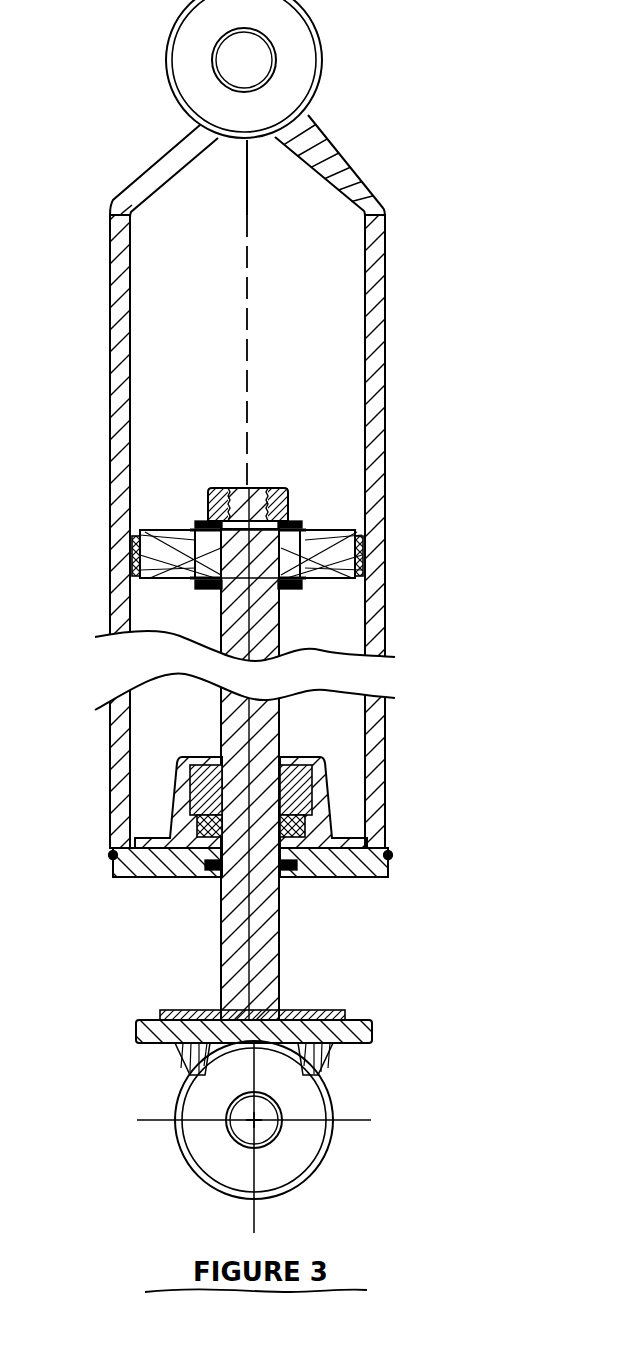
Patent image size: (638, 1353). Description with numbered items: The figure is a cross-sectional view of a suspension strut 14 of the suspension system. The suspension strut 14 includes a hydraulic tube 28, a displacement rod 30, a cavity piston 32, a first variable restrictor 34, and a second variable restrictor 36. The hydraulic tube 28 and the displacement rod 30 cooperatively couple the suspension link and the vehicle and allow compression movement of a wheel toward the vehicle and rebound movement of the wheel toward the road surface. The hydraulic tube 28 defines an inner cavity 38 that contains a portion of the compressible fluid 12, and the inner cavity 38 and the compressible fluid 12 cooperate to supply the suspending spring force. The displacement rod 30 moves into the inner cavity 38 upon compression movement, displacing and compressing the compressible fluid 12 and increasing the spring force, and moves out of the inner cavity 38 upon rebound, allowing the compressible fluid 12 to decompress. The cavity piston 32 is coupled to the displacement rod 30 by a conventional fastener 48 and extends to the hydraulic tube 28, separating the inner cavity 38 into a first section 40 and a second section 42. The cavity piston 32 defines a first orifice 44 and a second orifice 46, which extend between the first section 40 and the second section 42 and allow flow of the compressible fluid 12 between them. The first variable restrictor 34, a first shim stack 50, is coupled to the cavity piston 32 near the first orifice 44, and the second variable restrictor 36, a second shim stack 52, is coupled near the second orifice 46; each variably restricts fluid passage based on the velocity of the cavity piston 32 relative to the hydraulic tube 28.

The compressible fluid 12 is at (312, 387).
The suspension strut 14 is at (419, 268).
The hydraulic tube 28 is at (294, 531).
The displacement rod 30 is at (272, 618).
The cavity piston 32 is at (375, 588).
The first variable restrictor 34 is at (200, 527).
The second variable restrictor 36 is at (140, 600).
The inner cavity 38 is at (350, 322).
The first section 40 is at (143, 392).
The second section 42 is at (136, 637).
The first orifice 44 is at (365, 535).
The second orifice 46 is at (131, 565).
The fastener 48 is at (279, 490).
The first shim stack 50 is at (188, 530).
The second shim stack 52 is at (150, 606).